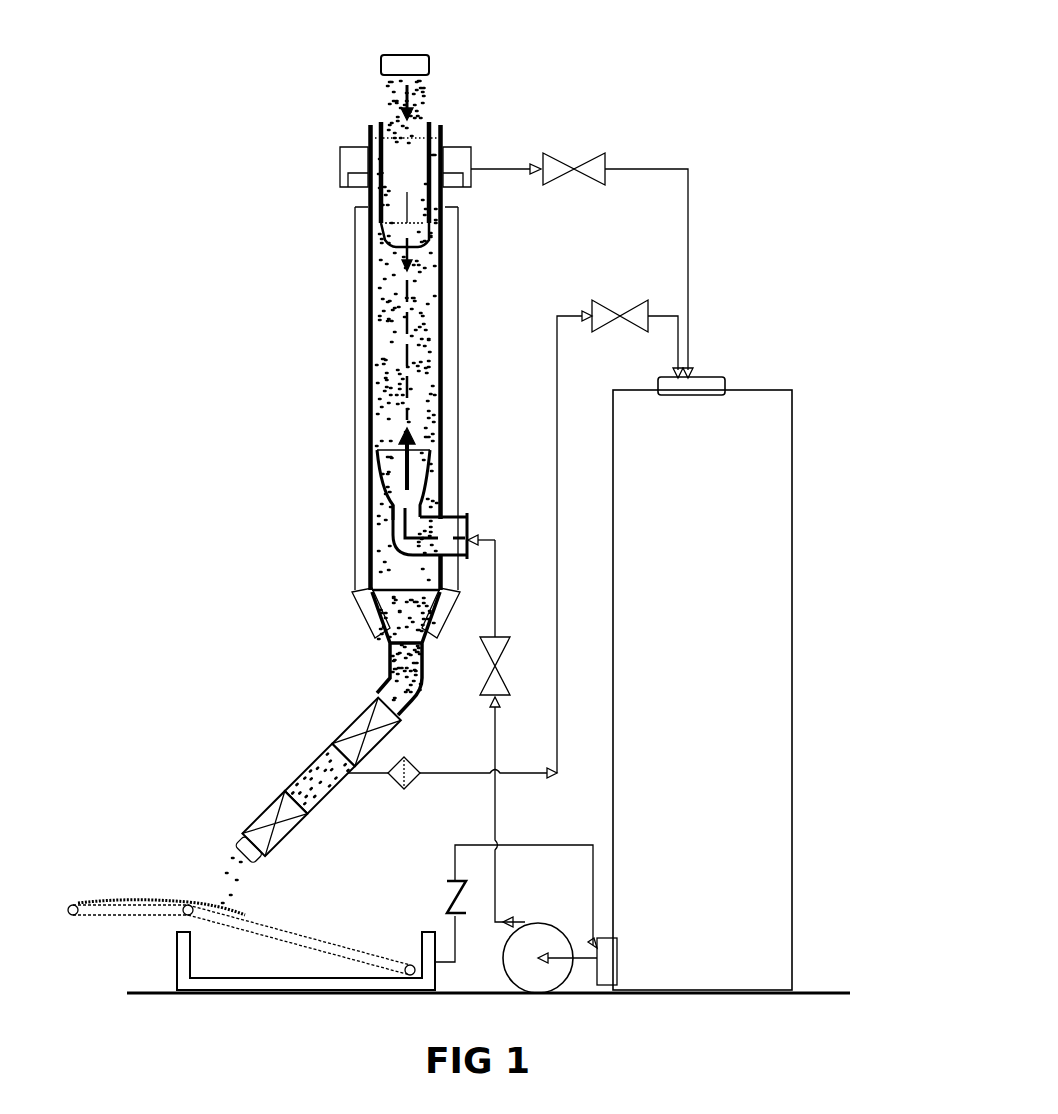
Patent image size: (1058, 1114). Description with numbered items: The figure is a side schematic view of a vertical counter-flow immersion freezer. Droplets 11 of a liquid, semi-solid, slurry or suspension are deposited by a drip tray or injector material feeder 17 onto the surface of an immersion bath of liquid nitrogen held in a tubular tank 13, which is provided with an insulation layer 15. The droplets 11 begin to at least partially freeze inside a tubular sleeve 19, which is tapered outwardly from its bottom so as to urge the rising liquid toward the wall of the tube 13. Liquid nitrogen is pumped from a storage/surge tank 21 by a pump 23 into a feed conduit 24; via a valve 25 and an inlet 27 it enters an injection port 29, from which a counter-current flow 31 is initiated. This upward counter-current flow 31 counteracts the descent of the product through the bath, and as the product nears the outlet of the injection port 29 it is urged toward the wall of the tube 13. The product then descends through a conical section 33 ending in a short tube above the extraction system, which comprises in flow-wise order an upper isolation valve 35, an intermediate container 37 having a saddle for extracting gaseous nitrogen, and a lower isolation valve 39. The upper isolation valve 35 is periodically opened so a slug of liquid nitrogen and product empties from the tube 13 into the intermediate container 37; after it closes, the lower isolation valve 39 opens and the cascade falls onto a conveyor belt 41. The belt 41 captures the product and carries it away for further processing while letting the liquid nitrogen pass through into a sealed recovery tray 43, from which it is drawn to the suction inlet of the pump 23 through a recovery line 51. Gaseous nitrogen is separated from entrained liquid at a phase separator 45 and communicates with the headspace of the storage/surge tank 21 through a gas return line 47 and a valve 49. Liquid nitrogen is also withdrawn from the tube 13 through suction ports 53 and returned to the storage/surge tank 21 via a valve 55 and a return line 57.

The droplets 11 is at (390, 96).
The tubular tank 13 is at (368, 263).
The insulation layer 15 is at (362, 357).
The drip tray or injector material feeder 17 is at (410, 62).
The tubular sleeve 19 is at (425, 228).
The storage/surge tank 21 is at (765, 530).
The pump 23 is at (545, 958).
The feed conduit 24 is at (495, 755).
The valve 25 is at (500, 640).
The inlet 27 is at (455, 542).
The injection port 29 is at (395, 520).
The counter-current flow 31 is at (410, 470).
The conical section 33 is at (382, 622).
The upper isolation valve 35 is at (357, 727).
The intermediate container 37 is at (325, 762).
The lower isolation valve 39 is at (262, 810).
The conveyor belt 41 is at (305, 937).
The sealed recovery tray 43 is at (183, 963).
The phase separator 45 is at (405, 778).
The gas return line 47 is at (558, 488).
The valve 49 is at (606, 300).
The recovery line 51 is at (455, 855).
The suction ports 53 is at (360, 185).
The valve 55 is at (598, 160).
The return line 57 is at (690, 250).